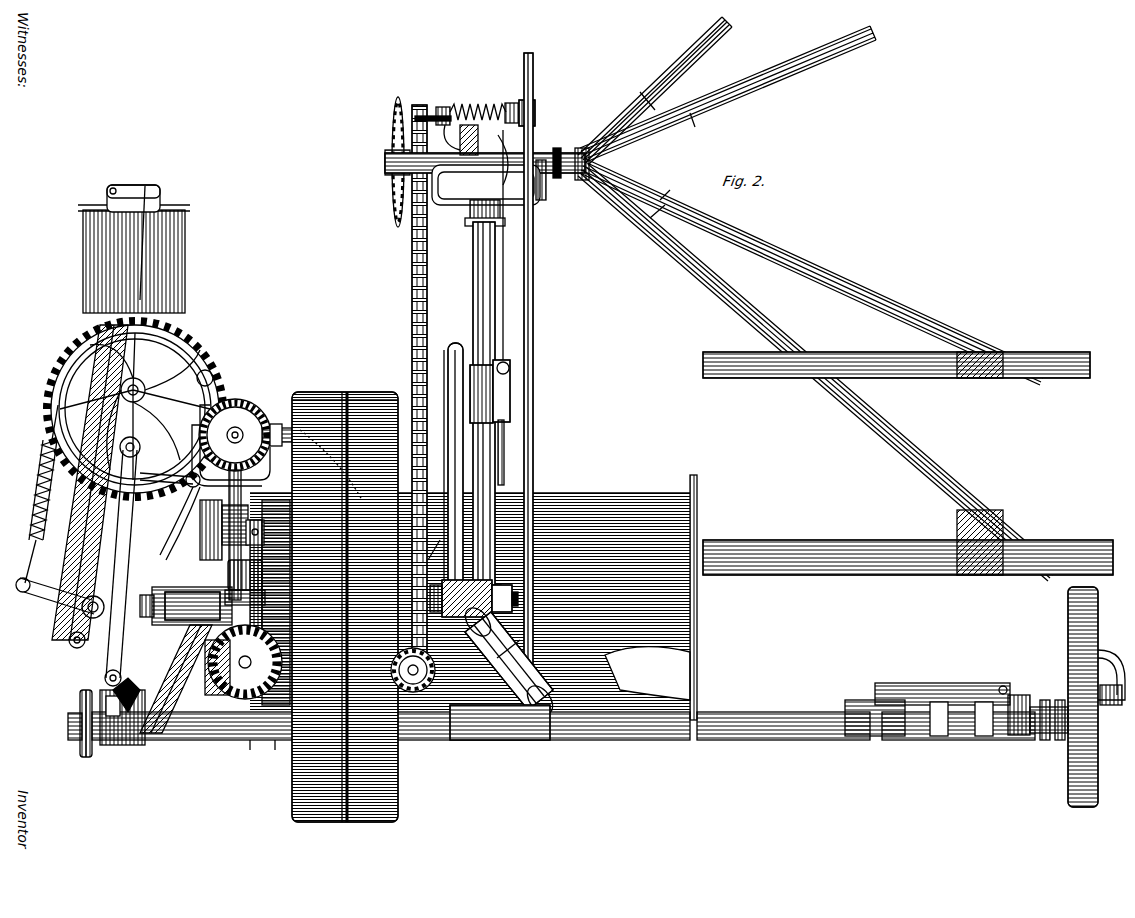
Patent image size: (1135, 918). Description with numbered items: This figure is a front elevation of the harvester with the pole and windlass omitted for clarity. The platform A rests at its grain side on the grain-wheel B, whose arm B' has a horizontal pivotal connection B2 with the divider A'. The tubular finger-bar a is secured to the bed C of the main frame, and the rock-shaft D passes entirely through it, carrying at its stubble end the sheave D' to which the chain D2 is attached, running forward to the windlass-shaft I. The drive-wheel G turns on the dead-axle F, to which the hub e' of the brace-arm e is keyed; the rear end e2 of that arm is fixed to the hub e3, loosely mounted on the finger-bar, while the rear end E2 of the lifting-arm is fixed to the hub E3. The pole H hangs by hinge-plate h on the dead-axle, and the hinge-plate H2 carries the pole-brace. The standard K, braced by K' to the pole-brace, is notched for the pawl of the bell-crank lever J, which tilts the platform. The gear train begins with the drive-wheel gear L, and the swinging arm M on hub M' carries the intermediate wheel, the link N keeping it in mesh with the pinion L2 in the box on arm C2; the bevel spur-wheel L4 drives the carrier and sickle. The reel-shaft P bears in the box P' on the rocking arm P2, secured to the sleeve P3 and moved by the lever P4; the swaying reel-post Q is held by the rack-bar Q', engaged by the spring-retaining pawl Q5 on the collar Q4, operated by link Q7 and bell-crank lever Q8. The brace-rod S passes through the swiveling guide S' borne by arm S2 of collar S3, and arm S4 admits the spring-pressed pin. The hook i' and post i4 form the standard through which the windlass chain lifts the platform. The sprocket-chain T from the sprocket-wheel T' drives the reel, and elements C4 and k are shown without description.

The finger-bar a is at (563, 724).
The rock-shaft D is at (59, 726).
The sheave D' is at (77, 723).
The chain D2 is at (1090, 722).
The brace-arm e is at (176, 679).
The rear end of brace-arm e2 is at (140, 699).
The hub e3 is at (122, 717).
The hub e' is at (192, 606).
The bed of main frame C is at (134, 249).
The arm C2 is at (219, 675).
The frame arm C4 is at (439, 551).
The pole H is at (135, 409).
The hinge-plate H2 is at (192, 597).
The bell-crank lever J is at (108, 505).
The windlass-shaft I is at (41, 494).
The standard K is at (231, 492).
The brace K' is at (220, 531).
The crooked link or eye bar N is at (248, 535).
The hinge-plate h is at (270, 564).
The dead-axle F is at (141, 606).
The swinging arm M is at (245, 577).
The hub M' is at (245, 602).
The drive-wheel gear L is at (249, 655).
The pinion L2 is at (278, 755).
The bevel spur-wheel L4 is at (248, 755).
The drive-wheel G is at (345, 607).
The sprocket-chain T is at (413, 438).
The sprocket-wheel T' is at (397, 211).
The lower sprocket k is at (418, 632).
The reel-shaft P is at (487, 164).
The rocking arm P2 is at (486, 185).
The horizontal box P' is at (548, 180).
The sleeve P3 is at (492, 189).
The lever P4 is at (471, 137).
The brace-rod S is at (509, 97).
The swiveling guide S' is at (542, 109).
The arm S2 is at (471, 100).
The collar S3 is at (422, 113).
The arm S4 is at (451, 137).
The reel-post Q is at (484, 410).
The rack-bar Q' is at (506, 452).
The collar Q4 is at (482, 394).
The spring-retaining pawl Q5 is at (512, 380).
The link Q7 is at (532, 294).
The bell-crank lever Q8 is at (510, 205).
The hook i' is at (455, 459).
The post i4 is at (437, 475).
The block R is at (461, 598).
The block cap R' is at (509, 590).
The rear end of lifting-arm E2 is at (511, 661).
The hub E3 is at (500, 722).
The platform A is at (818, 299).
The divider A' is at (908, 463).
The grain-wheel B is at (1090, 697).
The grain-wheel arm B' is at (1103, 675).
The horizontal pivotal connection B2 is at (1111, 687).